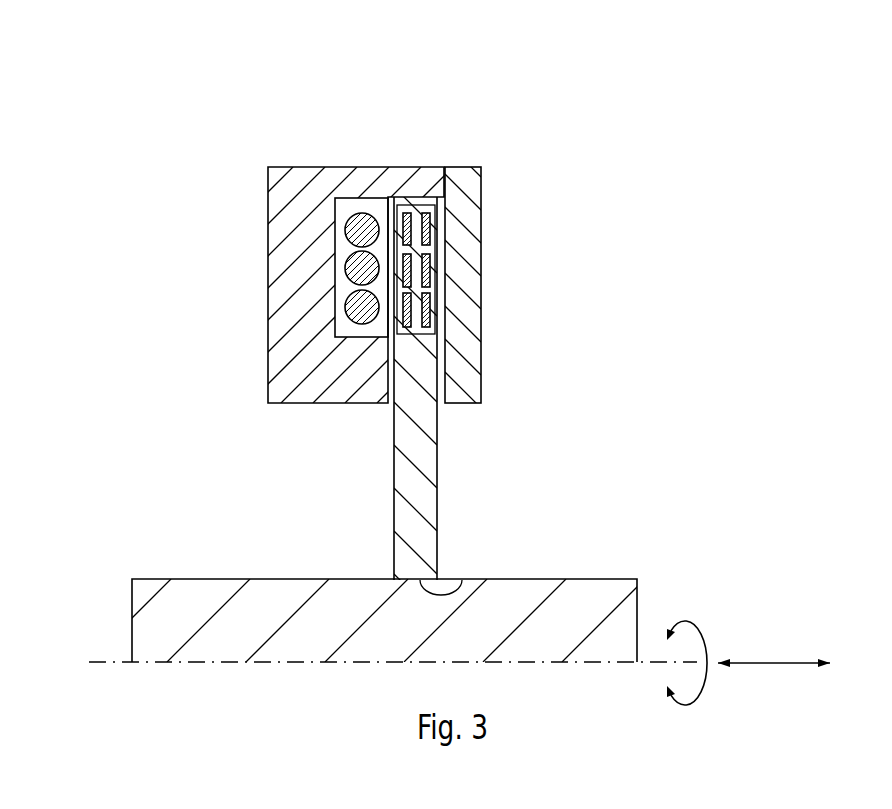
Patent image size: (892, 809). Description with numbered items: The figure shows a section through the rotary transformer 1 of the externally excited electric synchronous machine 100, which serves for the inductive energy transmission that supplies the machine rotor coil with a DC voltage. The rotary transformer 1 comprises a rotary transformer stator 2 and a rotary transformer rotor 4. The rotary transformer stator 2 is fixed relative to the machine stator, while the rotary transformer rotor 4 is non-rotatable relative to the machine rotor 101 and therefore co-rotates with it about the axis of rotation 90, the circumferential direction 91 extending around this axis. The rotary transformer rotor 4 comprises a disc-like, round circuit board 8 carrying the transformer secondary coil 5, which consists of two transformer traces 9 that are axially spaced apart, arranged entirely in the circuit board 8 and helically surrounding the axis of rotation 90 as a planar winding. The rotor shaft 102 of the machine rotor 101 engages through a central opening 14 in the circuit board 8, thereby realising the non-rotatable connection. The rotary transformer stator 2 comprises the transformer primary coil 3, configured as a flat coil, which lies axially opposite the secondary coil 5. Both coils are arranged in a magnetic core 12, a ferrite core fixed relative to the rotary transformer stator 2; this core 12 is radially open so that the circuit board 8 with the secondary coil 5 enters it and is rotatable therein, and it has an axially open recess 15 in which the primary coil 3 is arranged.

The externally excited electric synchronous machine 100 is at (197, 168).
The rotary transformer 1 is at (597, 193).
The rotary transformer stator 2 is at (317, 157).
The magnetic core 12 is at (267, 238).
The primary coil 3 is at (362, 220).
The axially open recess 15 is at (345, 288).
The secondary coil 5 is at (434, 227).
The transformer trace 9 is at (411, 303).
The rotary transformer rotor 4 is at (462, 463).
The circuit board 8 is at (400, 473).
The machine rotor 101 is at (600, 465).
The rotor shaft 102 is at (232, 592).
The central opening 14 is at (462, 580).
The axis of rotation 90 is at (772, 662).
The circumferential direction 91 is at (687, 620).